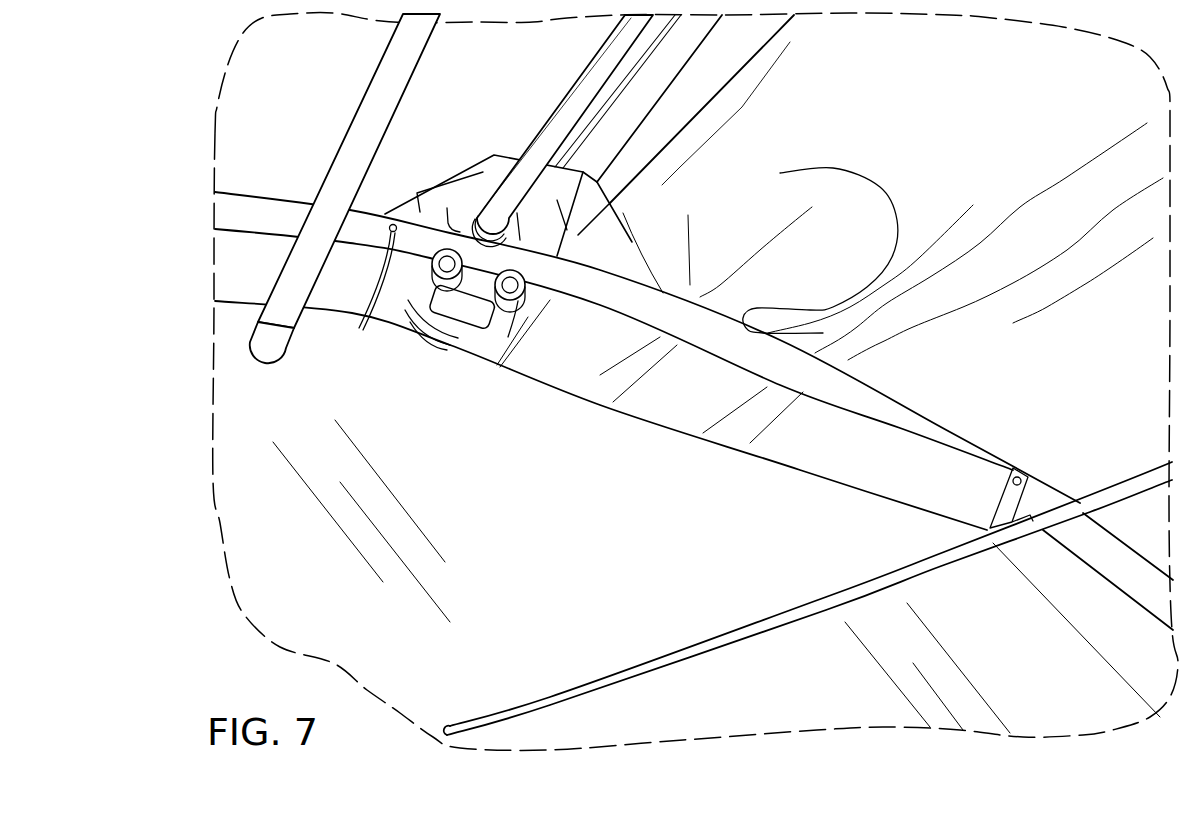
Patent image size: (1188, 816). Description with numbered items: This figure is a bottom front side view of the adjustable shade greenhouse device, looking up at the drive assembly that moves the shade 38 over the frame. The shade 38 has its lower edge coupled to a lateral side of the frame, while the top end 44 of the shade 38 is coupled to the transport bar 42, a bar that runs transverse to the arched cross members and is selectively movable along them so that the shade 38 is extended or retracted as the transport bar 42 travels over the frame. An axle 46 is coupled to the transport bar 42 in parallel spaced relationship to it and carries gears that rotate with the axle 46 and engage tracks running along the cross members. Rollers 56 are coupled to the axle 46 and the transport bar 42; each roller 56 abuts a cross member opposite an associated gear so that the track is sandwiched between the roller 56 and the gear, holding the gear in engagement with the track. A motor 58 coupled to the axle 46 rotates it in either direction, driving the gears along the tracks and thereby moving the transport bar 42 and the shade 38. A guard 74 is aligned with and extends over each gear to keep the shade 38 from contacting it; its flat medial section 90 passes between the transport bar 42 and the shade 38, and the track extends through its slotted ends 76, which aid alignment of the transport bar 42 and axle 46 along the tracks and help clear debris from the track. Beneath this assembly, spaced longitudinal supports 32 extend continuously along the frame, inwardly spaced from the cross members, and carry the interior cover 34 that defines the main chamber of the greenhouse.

The longitudinal support 32 is at (798, 617).
The interior cover 34 is at (792, 475).
The shade 38 is at (610, 392).
The transport bar 42 is at (625, 82).
The top end of the shade 44 is at (660, 42).
The axle 46 is at (555, 112).
The roller 56 is at (428, 277).
The motor 58 is at (440, 345).
The guard 74 is at (470, 168).
The slotted ends 76 is at (435, 188).
The flat medial section 90 is at (505, 167).